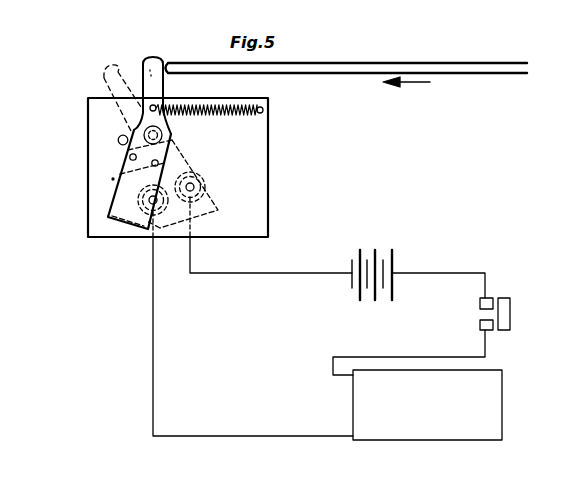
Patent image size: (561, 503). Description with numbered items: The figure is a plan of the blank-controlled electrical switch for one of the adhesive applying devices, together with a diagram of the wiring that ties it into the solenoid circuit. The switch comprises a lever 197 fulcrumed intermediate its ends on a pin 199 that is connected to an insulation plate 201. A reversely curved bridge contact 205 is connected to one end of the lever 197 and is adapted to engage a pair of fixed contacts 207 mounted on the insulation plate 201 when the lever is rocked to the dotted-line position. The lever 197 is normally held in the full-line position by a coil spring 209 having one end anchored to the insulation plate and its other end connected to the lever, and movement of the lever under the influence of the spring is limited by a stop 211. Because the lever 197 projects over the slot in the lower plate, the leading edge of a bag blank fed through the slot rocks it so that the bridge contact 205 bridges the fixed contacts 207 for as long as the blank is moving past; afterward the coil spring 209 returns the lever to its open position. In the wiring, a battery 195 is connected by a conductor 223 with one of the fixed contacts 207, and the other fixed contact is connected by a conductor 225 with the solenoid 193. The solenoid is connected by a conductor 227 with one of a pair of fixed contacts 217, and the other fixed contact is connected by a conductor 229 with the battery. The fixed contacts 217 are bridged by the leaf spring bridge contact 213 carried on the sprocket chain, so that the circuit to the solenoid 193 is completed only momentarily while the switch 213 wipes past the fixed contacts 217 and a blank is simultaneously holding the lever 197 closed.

The solenoid 193 is at (497, 404).
The battery 195 is at (380, 246).
The lever 197 is at (165, 82).
The pin 199 is at (162, 135).
The insulation plate 201 is at (258, 163).
The reversely curved bridge contact 205 is at (118, 197).
The fixed contacts 207 is at (205, 204).
The coil spring 209 is at (223, 105).
The stop 211 is at (118, 140).
The leaf spring bridge contact 213 is at (510, 307).
The fixed contacts 217 is at (480, 325).
The conductor 223 is at (245, 273).
The conductor 225 is at (153, 350).
The conductor 227 is at (392, 355).
The conductor 229 is at (440, 273).